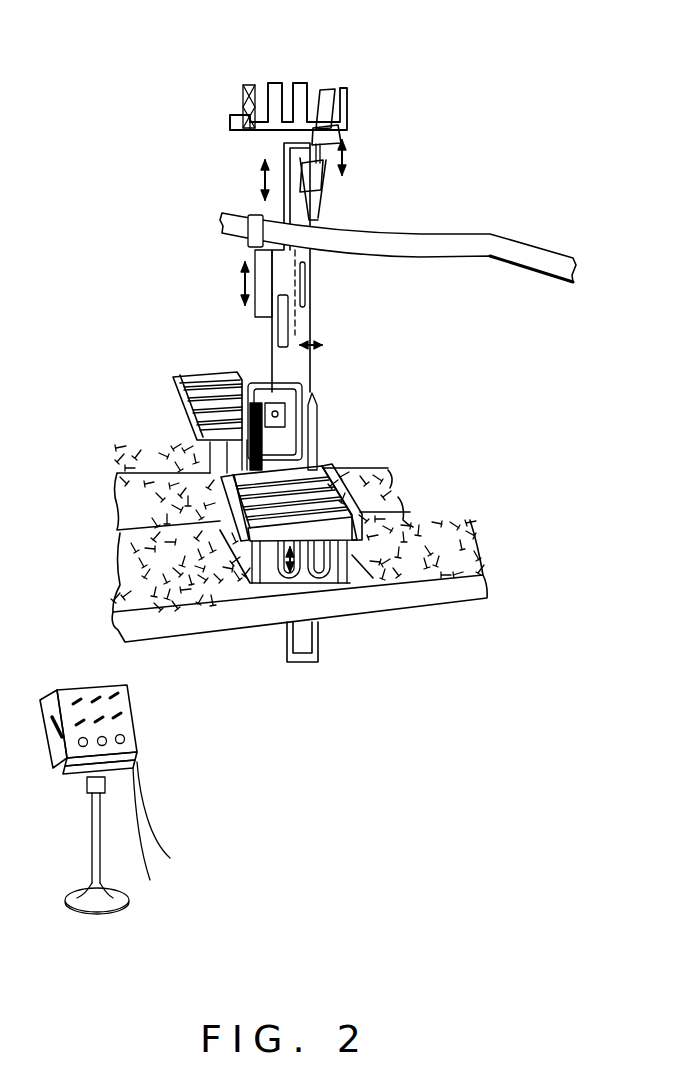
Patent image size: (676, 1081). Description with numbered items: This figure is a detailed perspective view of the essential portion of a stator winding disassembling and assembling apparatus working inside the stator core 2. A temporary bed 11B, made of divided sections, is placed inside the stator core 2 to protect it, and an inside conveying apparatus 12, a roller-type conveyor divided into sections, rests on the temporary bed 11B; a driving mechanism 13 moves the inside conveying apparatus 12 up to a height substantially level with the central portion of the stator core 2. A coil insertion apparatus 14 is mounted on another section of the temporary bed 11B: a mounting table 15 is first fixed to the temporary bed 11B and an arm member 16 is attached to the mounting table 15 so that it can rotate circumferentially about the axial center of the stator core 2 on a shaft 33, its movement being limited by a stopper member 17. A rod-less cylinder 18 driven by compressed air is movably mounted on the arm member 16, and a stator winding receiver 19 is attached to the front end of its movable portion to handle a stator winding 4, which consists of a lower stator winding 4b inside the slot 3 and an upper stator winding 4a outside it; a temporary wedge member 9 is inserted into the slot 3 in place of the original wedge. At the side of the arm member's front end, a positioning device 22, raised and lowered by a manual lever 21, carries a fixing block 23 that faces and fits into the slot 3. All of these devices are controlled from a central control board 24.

The stator core 2 is at (345, 110).
The slot 3 is at (277, 83).
The stator winding 4 is at (503, 252).
The upper stator winding 4a is at (235, 120).
The lower stator winding 4b is at (228, 105).
The temporary wedge member 9 is at (245, 130).
The temporary bed 11B is at (380, 492).
The inside conveying apparatus 12 is at (176, 416).
The driving mechanism 13 is at (318, 563).
The coil insertion apparatus 14 is at (378, 335).
The mounting table 15 is at (322, 442).
The arm member 16 is at (310, 313).
The stopper member 17 is at (305, 395).
The rod-less cylinder 18 is at (276, 346).
The stator winding receiver 19 is at (253, 218).
The manual lever 21 is at (345, 185).
The positioning device 22 is at (340, 215).
The fixing block 23 is at (348, 133).
The central control board 24 is at (135, 727).
The shaft 33 is at (288, 412).